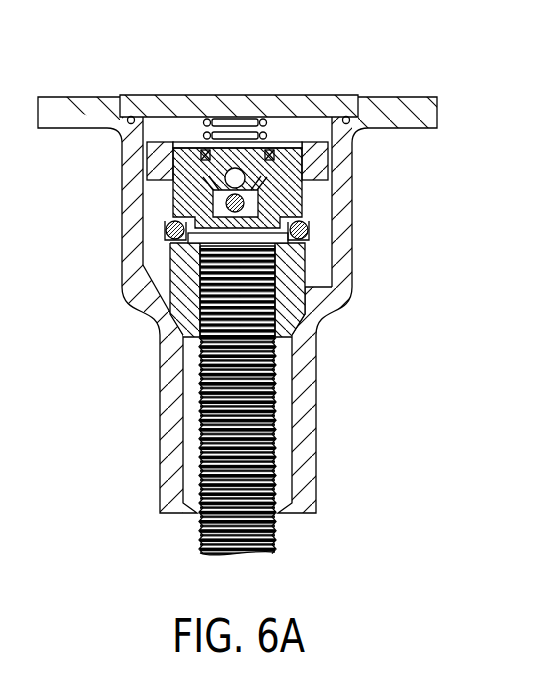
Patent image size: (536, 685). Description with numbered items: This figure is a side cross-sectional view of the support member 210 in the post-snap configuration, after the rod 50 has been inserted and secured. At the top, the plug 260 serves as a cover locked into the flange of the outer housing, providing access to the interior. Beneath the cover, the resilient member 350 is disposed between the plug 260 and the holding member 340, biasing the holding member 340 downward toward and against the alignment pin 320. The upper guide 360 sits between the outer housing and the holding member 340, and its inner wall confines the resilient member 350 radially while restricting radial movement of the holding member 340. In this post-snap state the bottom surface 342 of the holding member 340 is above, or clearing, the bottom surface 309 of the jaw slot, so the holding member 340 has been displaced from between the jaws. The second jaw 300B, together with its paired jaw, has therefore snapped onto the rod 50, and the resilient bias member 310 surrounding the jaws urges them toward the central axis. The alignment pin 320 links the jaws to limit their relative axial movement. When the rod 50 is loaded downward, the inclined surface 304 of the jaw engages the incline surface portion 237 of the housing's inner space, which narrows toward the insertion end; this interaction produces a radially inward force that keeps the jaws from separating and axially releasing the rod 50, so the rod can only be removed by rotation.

The support member 210 is at (397, 96).
The incline surface portion 237 is at (160, 298).
The plug 260 is at (236, 116).
The second jaw 300B is at (290, 303).
The inclined surface 304 is at (283, 332).
The bottom surface of slot 309 is at (302, 215).
The resilient bias member 310 is at (308, 232).
The alignment pin 320 is at (182, 168).
The holding member 340 is at (143, 232).
The bottom surface 342 is at (172, 270).
The resilient member 350 is at (231, 118).
The upper guide 360 is at (312, 148).
The rod 50 is at (268, 532).